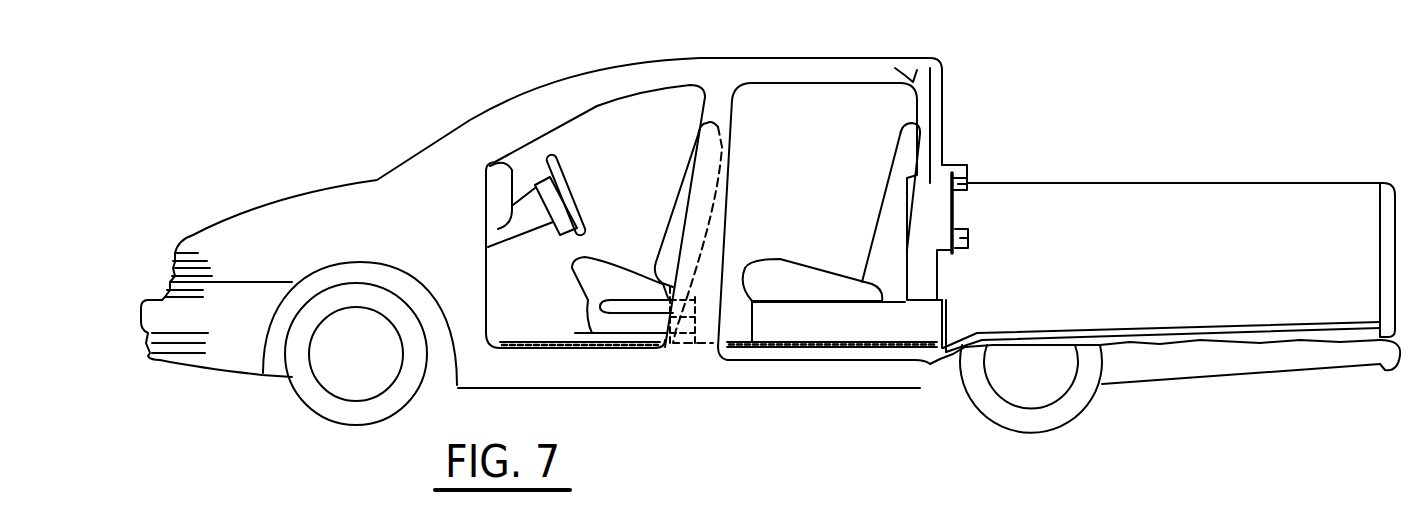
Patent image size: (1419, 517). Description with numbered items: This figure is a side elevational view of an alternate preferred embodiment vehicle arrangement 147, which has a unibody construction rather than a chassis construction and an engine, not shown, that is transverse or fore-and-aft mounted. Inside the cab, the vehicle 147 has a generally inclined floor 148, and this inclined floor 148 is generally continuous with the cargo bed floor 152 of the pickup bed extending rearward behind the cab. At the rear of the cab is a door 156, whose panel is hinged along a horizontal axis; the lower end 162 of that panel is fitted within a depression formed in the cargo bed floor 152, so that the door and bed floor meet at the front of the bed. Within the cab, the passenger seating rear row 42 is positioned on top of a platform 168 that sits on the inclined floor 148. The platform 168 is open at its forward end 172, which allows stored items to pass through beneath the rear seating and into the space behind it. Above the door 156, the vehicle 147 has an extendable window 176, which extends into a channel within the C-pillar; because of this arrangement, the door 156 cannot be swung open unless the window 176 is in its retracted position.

The vehicle arrangement 147 is at (536, 71).
The extendable window 176 is at (935, 117).
The door 156 is at (947, 273).
The lower end 162 is at (953, 333).
The cargo bed floor 152 is at (1208, 320).
The passenger seating rear row 42 is at (767, 257).
The platform 168 is at (807, 298).
The inclined floor 148 is at (790, 333).
The forward end 172 is at (713, 340).